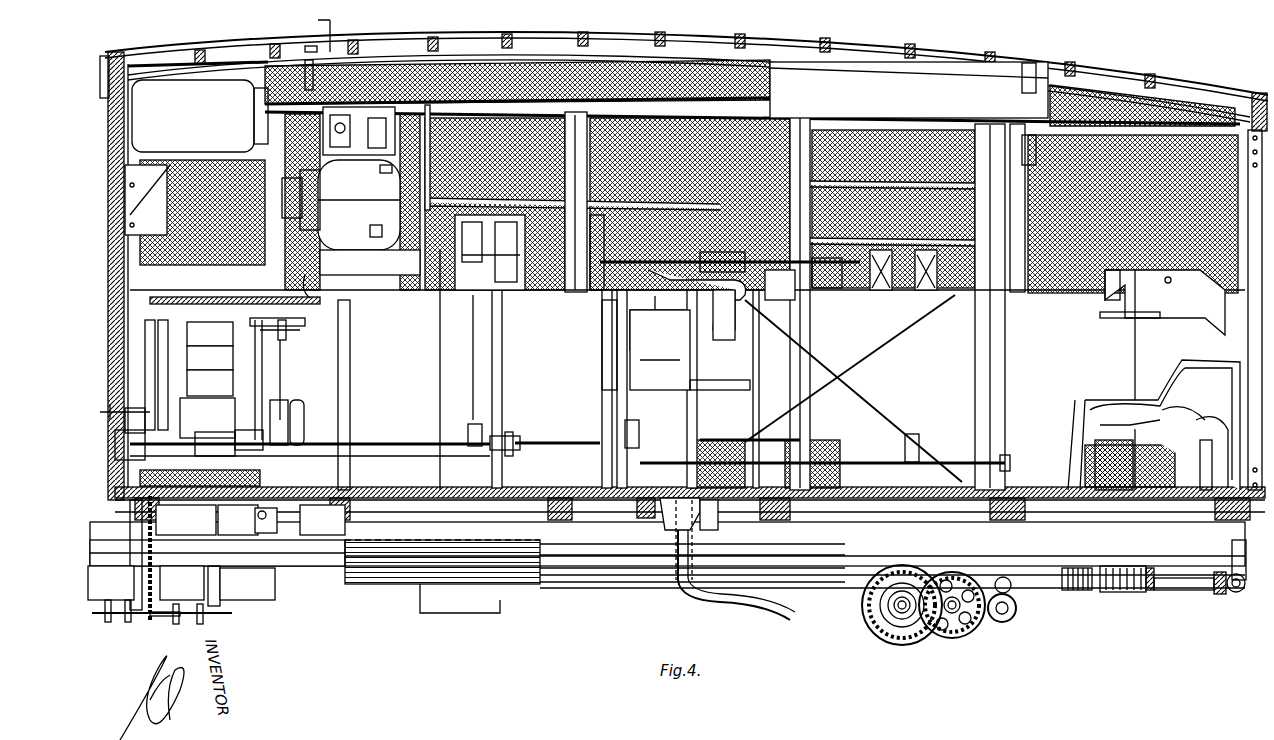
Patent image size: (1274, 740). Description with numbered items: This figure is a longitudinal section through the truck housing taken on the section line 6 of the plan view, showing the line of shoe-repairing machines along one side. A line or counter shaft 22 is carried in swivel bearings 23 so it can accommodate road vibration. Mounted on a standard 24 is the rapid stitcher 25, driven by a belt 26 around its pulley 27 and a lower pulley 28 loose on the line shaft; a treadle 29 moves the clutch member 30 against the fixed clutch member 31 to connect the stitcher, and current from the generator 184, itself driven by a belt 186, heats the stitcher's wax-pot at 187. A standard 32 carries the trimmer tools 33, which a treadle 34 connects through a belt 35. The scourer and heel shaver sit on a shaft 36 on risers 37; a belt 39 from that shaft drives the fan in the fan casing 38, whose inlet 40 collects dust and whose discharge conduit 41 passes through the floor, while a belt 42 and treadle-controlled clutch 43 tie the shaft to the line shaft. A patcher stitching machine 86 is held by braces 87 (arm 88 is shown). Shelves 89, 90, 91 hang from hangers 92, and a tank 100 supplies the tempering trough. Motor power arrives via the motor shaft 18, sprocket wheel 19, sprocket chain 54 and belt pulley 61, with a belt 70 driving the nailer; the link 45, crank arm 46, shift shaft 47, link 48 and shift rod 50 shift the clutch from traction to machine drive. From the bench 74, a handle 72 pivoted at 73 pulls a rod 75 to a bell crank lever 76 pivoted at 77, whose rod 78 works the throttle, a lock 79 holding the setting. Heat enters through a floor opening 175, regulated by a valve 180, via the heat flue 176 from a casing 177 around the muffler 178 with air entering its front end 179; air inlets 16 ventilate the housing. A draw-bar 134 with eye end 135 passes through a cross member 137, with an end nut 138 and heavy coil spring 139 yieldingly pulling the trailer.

The tank 100 is at (160, 62).
The section line 6 is at (330, 16).
The electric heating connection 187 is at (368, 62).
The standard 32 is at (490, 334).
The shelf 90 is at (854, 125).
The hangers 92 is at (958, 126).
The generator 184 is at (176, 155).
The pulley 27 is at (226, 162).
The rapid stitcher 25 is at (341, 178).
The belt 26 is at (252, 298).
The belt 186 is at (150, 312).
The pivot 73 is at (250, 334).
The rod 75 is at (250, 358).
The lower pulley 28 is at (250, 384).
The link 45 is at (175, 332).
The crank arm 46 is at (159, 375).
The belt pulley 61 is at (150, 410).
The bench or support 74 is at (302, 314).
The handle 72 is at (302, 330).
The lock 79 is at (296, 354).
The clutch member 30 is at (284, 402).
The clutch member 31 is at (306, 410).
The treadle 29 is at (302, 436).
The line or counter shaft 22 is at (420, 440).
The standard 24 is at (358, 338).
The swivel bearings 23 is at (470, 424).
The shelf 89 is at (470, 290).
The tools 33 is at (472, 290).
The belt 35 is at (474, 300).
The belt 39 is at (630, 310).
The belt 42 is at (655, 378).
The treadle 34 is at (517, 416).
The treadle-controlled clutch 43 is at (526, 436).
The risers 37 is at (630, 372).
The fan casing 38 is at (700, 362).
The inlet 40 is at (758, 300).
The discharge conduit 41 is at (712, 430).
The shaft 36 is at (832, 296).
The shelf 91 is at (880, 290).
The air inlets 16 is at (728, 458).
The stitching machine 86 is at (1132, 340).
The braces 87 is at (1130, 362).
The arm 88 is at (1198, 452).
The belt 70 is at (182, 536).
The shift shaft 47 is at (136, 558).
The sprocket chain 54 is at (186, 520).
The rod 78 is at (238, 505).
The pivot 77 is at (245, 510).
The bell crank lever 76 is at (272, 535).
The link 48 is at (111, 583).
The sprocket wheel 19 is at (190, 586).
The motor shaft 18 is at (275, 588).
The shift rod 50 is at (218, 616).
The front end of casing 179 is at (340, 565).
The casing 177 is at (548, 574).
The heat flue 176 is at (652, 558).
The muffler 178 is at (815, 584).
The valve 180 is at (700, 528).
The opening 175 is at (748, 530).
The heavy coil spring 139 is at (1080, 600).
The end nut 138 is at (1063, 596).
The cross member 137 is at (1140, 600).
The draw-bar 134 is at (1164, 604).
The eye end portion 135 is at (1238, 600).